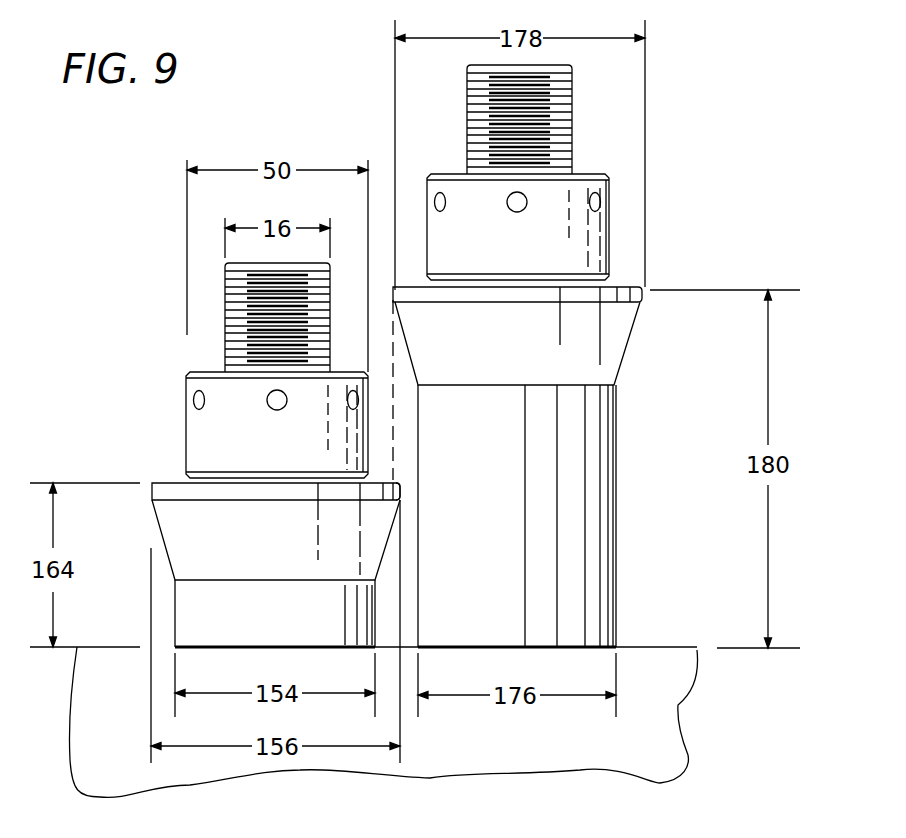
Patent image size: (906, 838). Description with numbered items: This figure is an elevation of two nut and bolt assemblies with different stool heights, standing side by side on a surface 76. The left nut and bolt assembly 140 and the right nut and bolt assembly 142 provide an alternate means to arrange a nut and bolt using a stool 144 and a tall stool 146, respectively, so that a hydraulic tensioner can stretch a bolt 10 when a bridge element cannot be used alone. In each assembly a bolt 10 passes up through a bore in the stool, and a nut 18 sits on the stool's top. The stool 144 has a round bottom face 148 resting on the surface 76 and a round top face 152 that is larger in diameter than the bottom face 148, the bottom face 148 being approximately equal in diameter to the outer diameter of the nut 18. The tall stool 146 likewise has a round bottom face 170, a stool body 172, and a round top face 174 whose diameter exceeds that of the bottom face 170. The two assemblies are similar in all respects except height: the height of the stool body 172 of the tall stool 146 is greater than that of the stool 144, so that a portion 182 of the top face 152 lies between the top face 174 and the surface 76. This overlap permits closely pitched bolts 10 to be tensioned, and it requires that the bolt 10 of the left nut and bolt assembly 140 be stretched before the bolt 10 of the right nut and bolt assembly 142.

The bolt 10 is at (225, 263).
The nut 18 is at (186, 404).
The surface 76 is at (646, 648).
The left nut and bolt assembly 140 is at (239, 498).
The right nut and bolt assembly 142 is at (563, 438).
The stool 144 is at (160, 530).
The tall stool 146 is at (630, 345).
The bottom face 148 is at (206, 648).
The top face 152 is at (160, 483).
The bottom face 170 is at (560, 650).
The stool body 172 is at (616, 487).
The top face 174 is at (640, 285).
The portion 182 is at (394, 483).